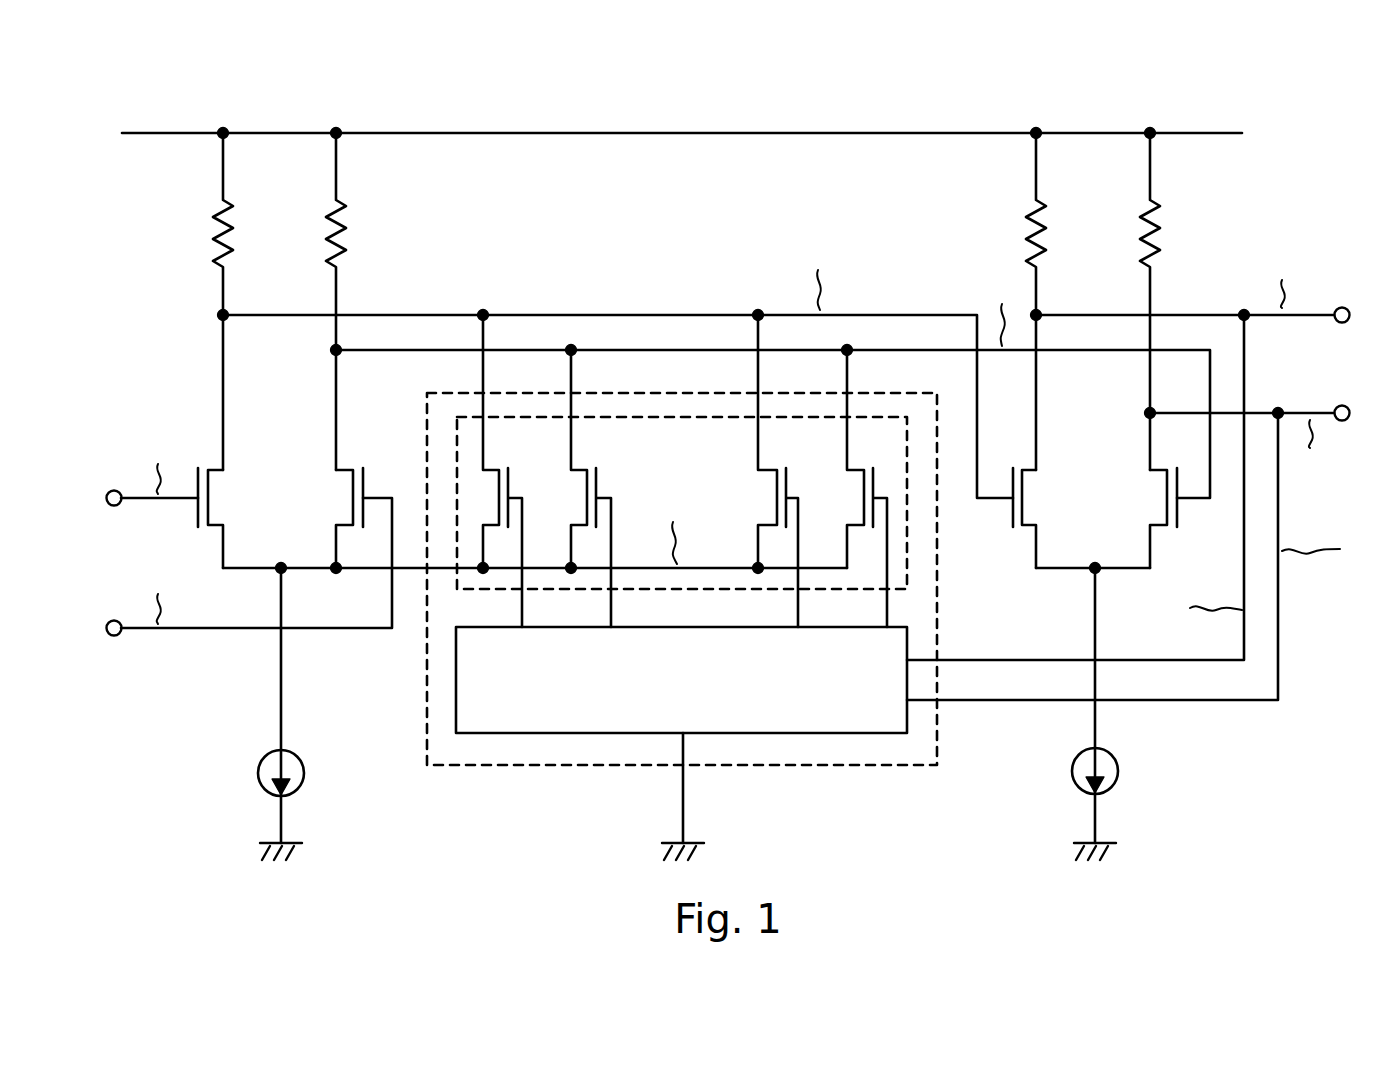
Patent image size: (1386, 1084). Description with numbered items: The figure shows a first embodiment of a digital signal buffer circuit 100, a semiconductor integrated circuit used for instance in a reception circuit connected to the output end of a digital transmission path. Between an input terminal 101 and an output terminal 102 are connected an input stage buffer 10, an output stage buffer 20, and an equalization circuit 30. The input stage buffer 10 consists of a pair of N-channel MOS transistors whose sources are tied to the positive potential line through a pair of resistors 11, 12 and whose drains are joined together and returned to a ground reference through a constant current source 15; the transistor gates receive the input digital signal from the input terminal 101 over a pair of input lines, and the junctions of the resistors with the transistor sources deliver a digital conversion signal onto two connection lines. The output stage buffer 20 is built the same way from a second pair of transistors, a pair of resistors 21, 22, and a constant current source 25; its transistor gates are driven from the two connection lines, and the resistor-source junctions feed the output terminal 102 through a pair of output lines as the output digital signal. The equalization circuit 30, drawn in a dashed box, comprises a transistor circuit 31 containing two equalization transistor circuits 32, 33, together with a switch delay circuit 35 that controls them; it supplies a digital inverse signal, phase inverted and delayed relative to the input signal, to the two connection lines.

The digital signal buffer circuit 100 is at (258, 212).
The input stage buffer 10 is at (258, 212).
The resistor 11 is at (238, 228).
The resistor 12 is at (350, 228).
The constant current source 15 is at (297, 760).
The output stage buffer 20 is at (1075, 210).
The resistor 21 is at (1050, 228).
The resistor 22 is at (1162, 228).
The constant current source 25 is at (1126, 771).
The equalization circuit 30 is at (848, 765).
The transistor circuit 31 is at (907, 520).
The equalization transistor circuit 32 is at (838, 496).
The equalization transistor circuit 33 is at (557, 496).
The switch delay circuit 35 is at (907, 634).
The input terminal 101 is at (116, 489).
The output terminal 102 is at (1342, 304).